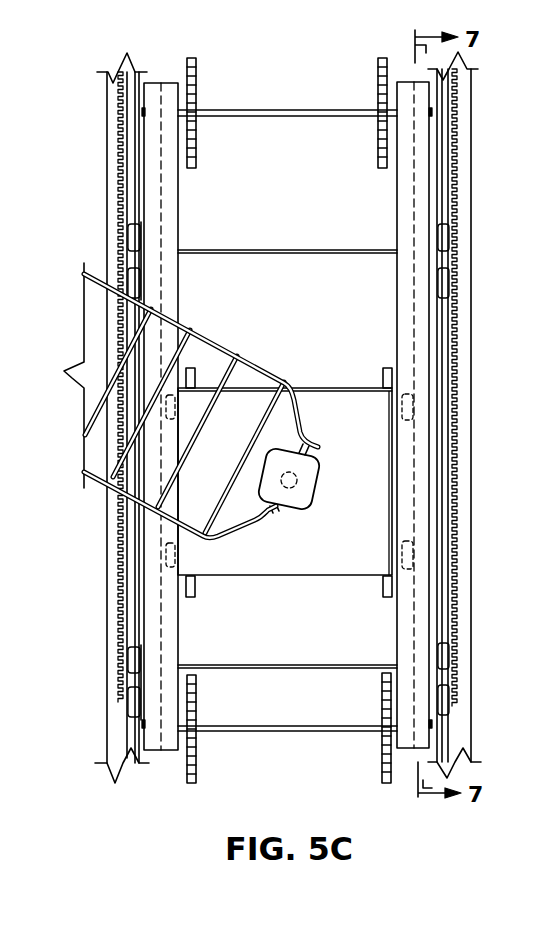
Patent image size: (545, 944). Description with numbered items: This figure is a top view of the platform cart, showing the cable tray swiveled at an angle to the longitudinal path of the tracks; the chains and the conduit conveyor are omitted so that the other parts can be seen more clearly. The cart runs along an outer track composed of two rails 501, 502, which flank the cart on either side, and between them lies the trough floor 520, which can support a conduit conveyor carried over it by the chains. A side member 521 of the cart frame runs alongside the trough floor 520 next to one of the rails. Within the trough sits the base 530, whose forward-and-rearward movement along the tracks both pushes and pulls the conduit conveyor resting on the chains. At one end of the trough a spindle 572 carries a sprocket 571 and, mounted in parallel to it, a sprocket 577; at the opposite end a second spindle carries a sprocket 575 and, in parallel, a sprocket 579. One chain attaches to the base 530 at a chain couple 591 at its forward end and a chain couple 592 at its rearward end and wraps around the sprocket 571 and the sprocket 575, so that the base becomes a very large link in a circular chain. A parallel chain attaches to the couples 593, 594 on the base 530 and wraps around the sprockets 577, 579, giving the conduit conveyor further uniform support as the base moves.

The rail 501 is at (472, 645).
The rail 502 is at (107, 217).
The trough floor 520 is at (338, 333).
The frame side member 521 is at (393, 220).
The base 530 is at (368, 540).
The sprocket 571 is at (377, 135).
The spindle 572 is at (313, 106).
The sprocket 575 is at (381, 692).
The sprocket 577 is at (197, 104).
The sprocket 579 is at (197, 738).
The chain couple 591 is at (383, 374).
The chain couple 592 is at (383, 585).
The couple 593 is at (190, 366).
The couple 594 is at (196, 586).